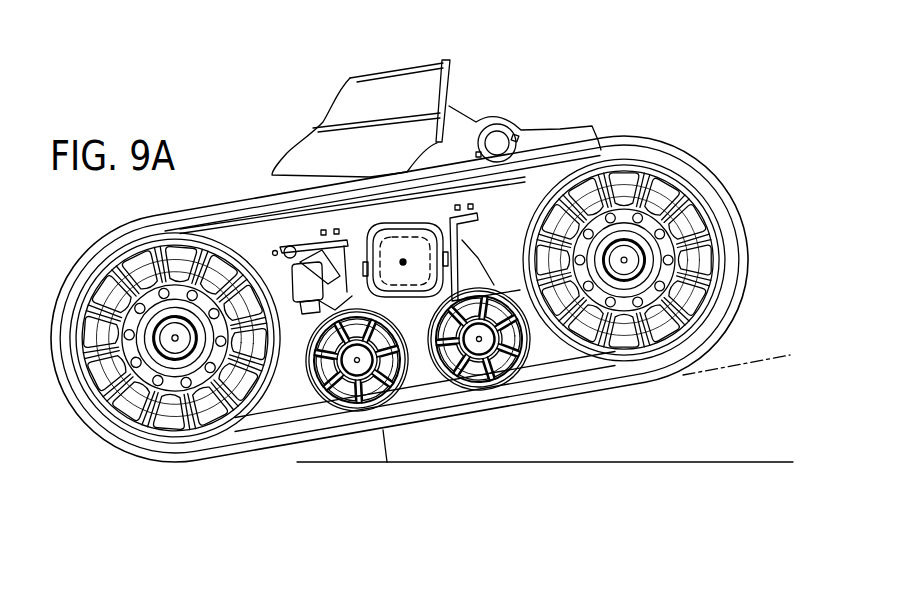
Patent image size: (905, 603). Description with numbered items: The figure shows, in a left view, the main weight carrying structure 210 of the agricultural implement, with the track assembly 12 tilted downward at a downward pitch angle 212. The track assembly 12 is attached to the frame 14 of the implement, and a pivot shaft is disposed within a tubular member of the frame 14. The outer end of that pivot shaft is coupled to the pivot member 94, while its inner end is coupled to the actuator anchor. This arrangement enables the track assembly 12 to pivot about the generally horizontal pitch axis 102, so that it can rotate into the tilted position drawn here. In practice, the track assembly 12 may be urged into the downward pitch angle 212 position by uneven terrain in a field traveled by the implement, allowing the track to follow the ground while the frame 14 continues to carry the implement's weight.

The track assembly 12 is at (424, 268).
The frame 14 is at (392, 103).
The pivot member 94 is at (427, 228).
The pitch axis 102 is at (403, 262).
The main weight carrying structure 210 is at (487, 44).
The downward pitch angle 212 is at (388, 444).